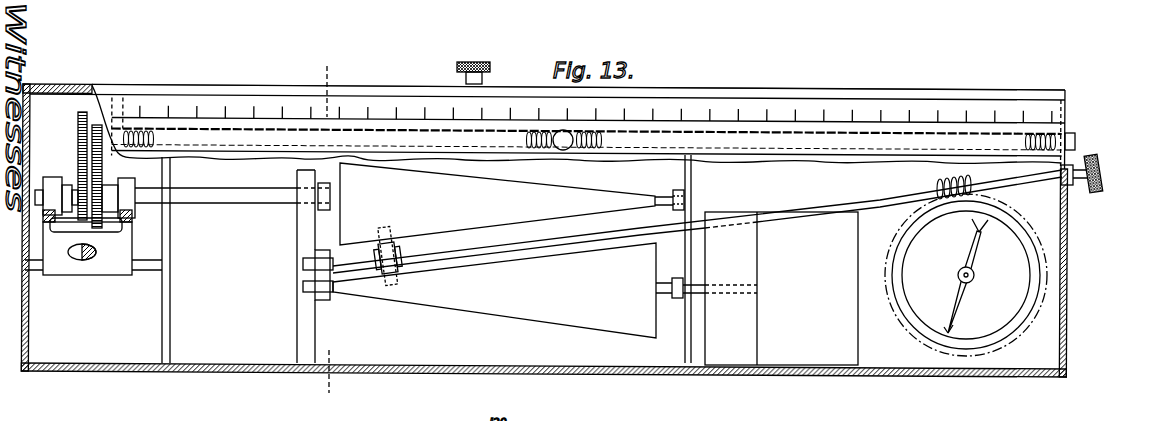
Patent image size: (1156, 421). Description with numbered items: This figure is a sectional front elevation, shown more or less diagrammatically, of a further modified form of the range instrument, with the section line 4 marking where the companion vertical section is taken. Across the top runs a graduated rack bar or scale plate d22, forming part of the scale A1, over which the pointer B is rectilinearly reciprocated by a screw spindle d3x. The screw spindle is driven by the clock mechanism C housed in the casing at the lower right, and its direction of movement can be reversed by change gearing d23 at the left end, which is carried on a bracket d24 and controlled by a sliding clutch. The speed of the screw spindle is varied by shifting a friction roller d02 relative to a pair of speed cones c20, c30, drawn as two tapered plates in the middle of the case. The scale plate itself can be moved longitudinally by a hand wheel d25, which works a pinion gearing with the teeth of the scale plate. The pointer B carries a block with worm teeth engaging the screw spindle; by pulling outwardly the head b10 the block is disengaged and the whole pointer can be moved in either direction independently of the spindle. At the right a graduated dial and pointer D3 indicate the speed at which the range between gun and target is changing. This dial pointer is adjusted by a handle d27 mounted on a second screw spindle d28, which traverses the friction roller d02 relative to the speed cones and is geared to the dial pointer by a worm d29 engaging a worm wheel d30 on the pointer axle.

The graduated rack bar or scale plate d22 is at (668, 106).
The scale A1 is at (578, 78).
The section line 4 is at (323, 240).
The hand wheel d25 is at (460, 66).
The screw spindle d3x is at (135, 137).
The pointer B is at (565, 131).
The change gearing d23 is at (80, 170).
The bracket d24 is at (72, 268).
The speed cone c20 is at (580, 192).
The head b10 is at (557, 151).
The screw spindle d28 is at (861, 203).
The friction roller d02 is at (383, 257).
The speed cone c30 is at (465, 297).
The clock mechanism C is at (781, 288).
The worm d29 is at (950, 179).
The handle d27 is at (1093, 190).
The worm wheel d30 is at (1042, 297).
The graduated dial and pointer D3 is at (968, 276).